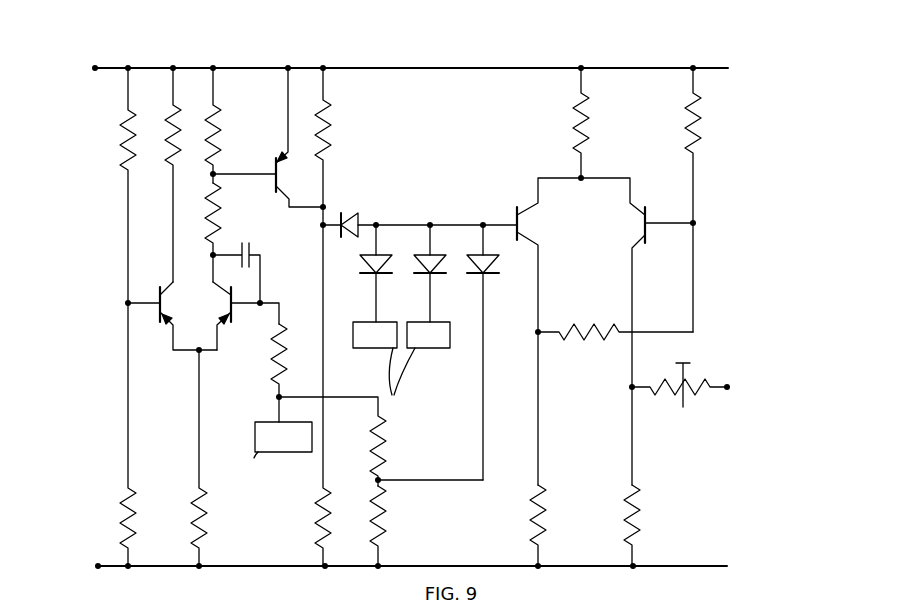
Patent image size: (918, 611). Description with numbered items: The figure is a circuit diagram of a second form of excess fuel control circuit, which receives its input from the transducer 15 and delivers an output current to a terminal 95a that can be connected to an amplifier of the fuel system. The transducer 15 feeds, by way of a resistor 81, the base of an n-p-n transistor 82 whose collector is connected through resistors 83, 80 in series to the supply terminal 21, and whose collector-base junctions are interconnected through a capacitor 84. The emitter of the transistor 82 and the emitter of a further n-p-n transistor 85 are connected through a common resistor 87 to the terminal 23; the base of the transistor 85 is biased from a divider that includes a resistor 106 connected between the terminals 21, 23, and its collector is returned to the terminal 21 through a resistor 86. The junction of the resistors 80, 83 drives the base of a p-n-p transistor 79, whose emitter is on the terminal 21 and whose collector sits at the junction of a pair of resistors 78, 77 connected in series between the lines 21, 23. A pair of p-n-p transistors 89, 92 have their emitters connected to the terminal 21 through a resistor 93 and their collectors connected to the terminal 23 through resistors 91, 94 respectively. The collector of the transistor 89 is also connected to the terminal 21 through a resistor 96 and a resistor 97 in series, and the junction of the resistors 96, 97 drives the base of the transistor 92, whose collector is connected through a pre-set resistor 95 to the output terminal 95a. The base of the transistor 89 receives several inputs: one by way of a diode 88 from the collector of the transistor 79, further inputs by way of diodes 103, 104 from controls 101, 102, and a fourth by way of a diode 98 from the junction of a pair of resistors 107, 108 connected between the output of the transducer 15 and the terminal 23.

The terminal 21 is at (95, 68).
The terminal 23 is at (97, 571).
The transducer 15 is at (268, 434).
The resistor 77 is at (318, 527).
The resistor 78 is at (332, 140).
The p-n-p transistor 79 is at (268, 160).
The resistor 80 is at (217, 130).
The resistor 81 is at (273, 382).
The n-p-n transistor 82 is at (226, 333).
The resistor 83 is at (223, 233).
The capacitor 84 is at (257, 250).
The n-p-n transistor 85 is at (172, 299).
The resistor 86 is at (167, 153).
The resistor 87 is at (208, 530).
The diode 88 is at (363, 212).
The p-n-p transistor 89 is at (518, 203).
The resistor 91 is at (548, 518).
The p-n-p transistor 92 is at (651, 205).
The resistor 93 is at (590, 137).
The resistor 94 is at (645, 525).
The pre-set resistor 95 is at (672, 398).
The terminal 95a is at (727, 392).
The resistor 96 is at (571, 321).
The resistor 97 is at (700, 137).
The diode 98 is at (500, 258).
The control 101 is at (375, 338).
The control 102 is at (440, 338).
The diode 103 is at (117, 123).
The diode 104 is at (420, 263).
The resistor 106 is at (120, 522).
The resistor 107 is at (390, 445).
The resistor 108 is at (390, 523).